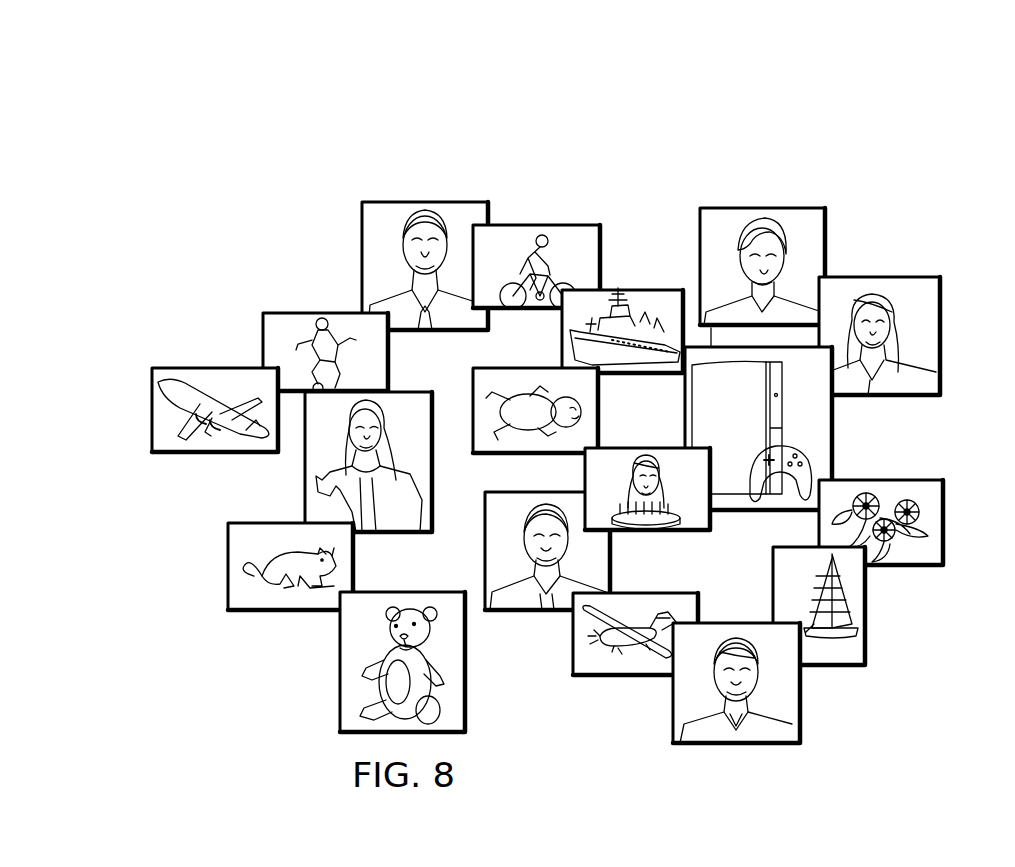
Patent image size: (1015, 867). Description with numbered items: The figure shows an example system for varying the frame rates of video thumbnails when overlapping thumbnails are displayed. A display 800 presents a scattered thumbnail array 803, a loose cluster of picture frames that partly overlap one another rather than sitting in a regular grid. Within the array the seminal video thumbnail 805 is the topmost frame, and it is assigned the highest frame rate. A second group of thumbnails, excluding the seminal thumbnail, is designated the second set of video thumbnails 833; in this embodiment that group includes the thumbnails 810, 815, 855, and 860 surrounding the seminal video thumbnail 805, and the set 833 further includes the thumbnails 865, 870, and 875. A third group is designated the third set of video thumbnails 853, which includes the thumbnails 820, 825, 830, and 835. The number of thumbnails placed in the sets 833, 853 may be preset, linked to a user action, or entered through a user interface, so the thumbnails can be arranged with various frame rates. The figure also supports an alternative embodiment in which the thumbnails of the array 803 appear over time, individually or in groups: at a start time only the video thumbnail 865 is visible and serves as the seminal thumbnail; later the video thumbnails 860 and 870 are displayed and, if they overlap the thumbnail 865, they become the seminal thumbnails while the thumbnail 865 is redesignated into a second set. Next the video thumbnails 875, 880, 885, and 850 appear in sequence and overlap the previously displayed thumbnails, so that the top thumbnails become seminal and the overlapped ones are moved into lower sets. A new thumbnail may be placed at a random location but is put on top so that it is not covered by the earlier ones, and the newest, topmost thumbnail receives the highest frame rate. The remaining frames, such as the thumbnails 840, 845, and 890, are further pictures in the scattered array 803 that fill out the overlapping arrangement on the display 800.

The display 800 is at (332, 89).
The scattered thumbnail array 803 is at (858, 198).
The seminal video thumbnail 805 is at (600, 414).
The video thumbnail 810 is at (670, 531).
The video thumbnail 815 is at (485, 556).
The video thumbnail 820 is at (621, 677).
The video thumbnail 825 is at (752, 744).
The video thumbnail 830 is at (840, 666).
The second set of video thumbnails 833 is at (316, 236).
The video thumbnail 835 is at (905, 566).
The game console photo content item 840 is at (834, 448).
The woman with long hair photo content item 845 is at (910, 276).
The video thumbnail 850 is at (790, 207).
The third set of video thumbnails 853 is at (920, 668).
The video thumbnail 855 is at (562, 346).
The video thumbnail 860 is at (576, 224).
The video thumbnail 865 is at (412, 201).
The video thumbnail 870 is at (306, 312).
The video thumbnail 875 is at (216, 367).
The video thumbnail 880 is at (305, 482).
The video thumbnail 885 is at (228, 568).
The teddy bear photo content item 890 is at (340, 676).